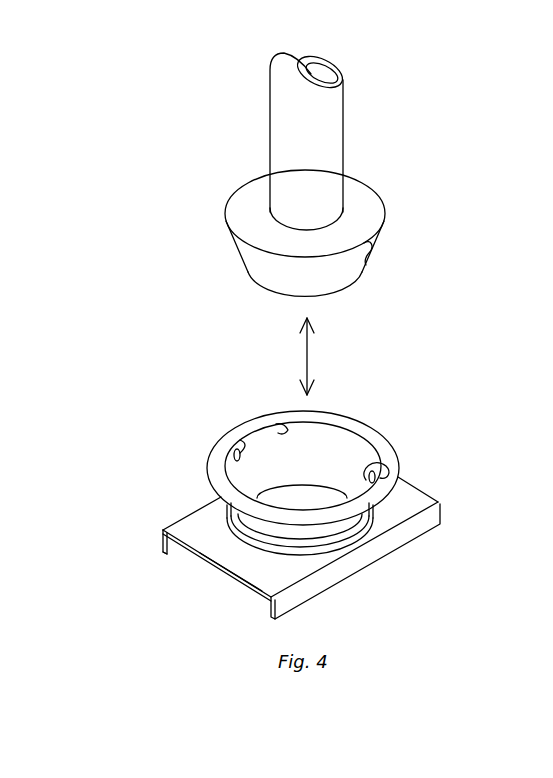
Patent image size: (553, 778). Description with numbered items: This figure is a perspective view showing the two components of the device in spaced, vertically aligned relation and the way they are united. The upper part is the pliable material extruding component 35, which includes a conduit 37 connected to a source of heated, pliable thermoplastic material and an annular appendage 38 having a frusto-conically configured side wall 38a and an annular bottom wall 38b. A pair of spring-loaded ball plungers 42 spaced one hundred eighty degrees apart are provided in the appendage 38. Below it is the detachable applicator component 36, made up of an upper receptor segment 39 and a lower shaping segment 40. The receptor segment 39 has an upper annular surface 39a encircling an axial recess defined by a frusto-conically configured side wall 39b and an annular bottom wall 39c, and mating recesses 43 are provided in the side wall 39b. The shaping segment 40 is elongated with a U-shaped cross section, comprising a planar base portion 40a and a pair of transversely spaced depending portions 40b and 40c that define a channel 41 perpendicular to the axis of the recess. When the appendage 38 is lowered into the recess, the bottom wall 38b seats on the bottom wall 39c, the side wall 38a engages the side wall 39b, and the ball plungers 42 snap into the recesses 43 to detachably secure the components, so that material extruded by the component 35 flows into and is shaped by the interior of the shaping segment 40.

The pliable material extruding component 35 is at (243, 176).
The conduit 37 is at (343, 128).
The annular appendage 38 is at (360, 208).
The frusto-conically configured side wall 38a is at (353, 276).
The annular bottom wall 38b is at (326, 300).
The spring-loaded ball plunger 42 is at (372, 250).
The pliable, extruded material applicator component 36 is at (206, 472).
The upper receptor segment 39 is at (356, 532).
The upper annular surface 39a is at (357, 427).
The frusto-conically configured side wall 39b is at (284, 430).
The annular bottom wall 39c is at (312, 497).
The mating recess 43 is at (238, 449).
The lower shaping segment 40 is at (209, 558).
The planar base portion 40a is at (262, 578).
The depending portion 40b is at (163, 540).
The depending portion 40c is at (432, 518).
The channel 41 is at (167, 553).